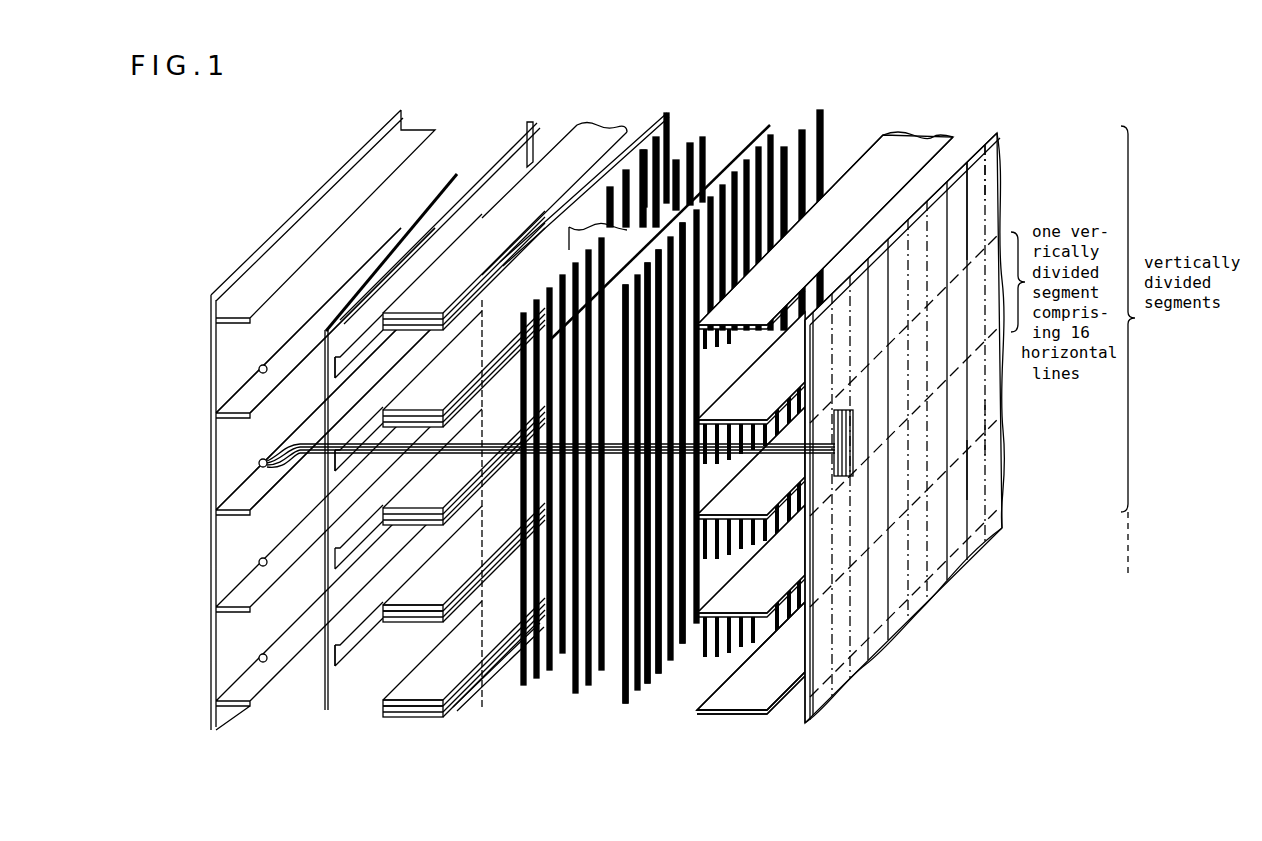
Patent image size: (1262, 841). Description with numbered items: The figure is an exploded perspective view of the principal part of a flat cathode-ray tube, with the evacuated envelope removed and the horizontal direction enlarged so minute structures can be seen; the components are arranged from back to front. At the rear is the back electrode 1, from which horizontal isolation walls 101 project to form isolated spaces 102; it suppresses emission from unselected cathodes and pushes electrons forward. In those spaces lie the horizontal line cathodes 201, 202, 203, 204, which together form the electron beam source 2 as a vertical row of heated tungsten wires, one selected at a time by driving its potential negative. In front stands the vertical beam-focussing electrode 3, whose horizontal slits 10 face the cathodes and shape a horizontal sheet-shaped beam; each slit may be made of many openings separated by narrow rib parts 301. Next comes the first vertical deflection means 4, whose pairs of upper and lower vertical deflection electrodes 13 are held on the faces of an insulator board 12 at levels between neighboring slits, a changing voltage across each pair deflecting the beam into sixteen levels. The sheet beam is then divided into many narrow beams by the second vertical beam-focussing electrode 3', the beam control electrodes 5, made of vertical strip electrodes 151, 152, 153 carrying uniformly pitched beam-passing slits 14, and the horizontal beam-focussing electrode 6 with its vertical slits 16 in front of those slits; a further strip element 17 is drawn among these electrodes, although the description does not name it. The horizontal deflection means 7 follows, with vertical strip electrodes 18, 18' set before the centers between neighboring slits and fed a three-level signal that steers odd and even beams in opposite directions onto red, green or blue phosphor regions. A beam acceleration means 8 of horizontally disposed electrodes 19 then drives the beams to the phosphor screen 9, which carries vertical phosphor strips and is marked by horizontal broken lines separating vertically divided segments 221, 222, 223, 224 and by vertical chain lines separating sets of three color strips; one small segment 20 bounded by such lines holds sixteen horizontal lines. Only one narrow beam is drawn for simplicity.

The back electrode 1 is at (317, 205).
The horizontal slit 10 is at (213, 305).
The horizontal isolation wall 101 is at (242, 402).
The isolated space 102 is at (232, 436).
The line cathode 201 is at (257, 367).
The line cathode 202 is at (258, 462).
The line cathode 203 is at (258, 562).
The line cathode 204 is at (258, 657).
The electron beam source 2 is at (457, 173).
The insulator board 12 is at (422, 612).
The vertical deflection electrode 13 is at (420, 605).
The vertical beam-focussing electrode 3 is at (442, 398).
The rib part 301 is at (531, 140).
The second vertical beam-focussing electrode 3' is at (584, 176).
The first vertical deflection means 4 is at (590, 142).
The beam-passing slit 14 is at (520, 668).
The vertical strip electrode 151 is at (533, 677).
The vertical strip electrode 152 is at (540, 690).
The vertical strip electrode 153 is at (560, 657).
The vertical slit 16 is at (593, 663).
The electrode strip 17 is at (567, 657).
The vertical strip electrode 18 is at (649, 505).
The vertical strip electrode 18' is at (682, 492).
The beam control electrode 5 is at (700, 137).
The horizontal beam-focussing electrode 6 is at (770, 132).
The horizontal deflection means 7 is at (810, 127).
The beam acceleration means 8 is at (905, 133).
The horizontally disposed electrode 19 is at (750, 610).
The phosphor screen 9 is at (997, 133).
The vertically divided segment 221 is at (997, 177).
The vertically divided segment 222 is at (997, 247).
The vertically divided segment 223 is at (991, 422).
The vertically divided segment 224 is at (987, 469).
The small segment 20 is at (848, 477).